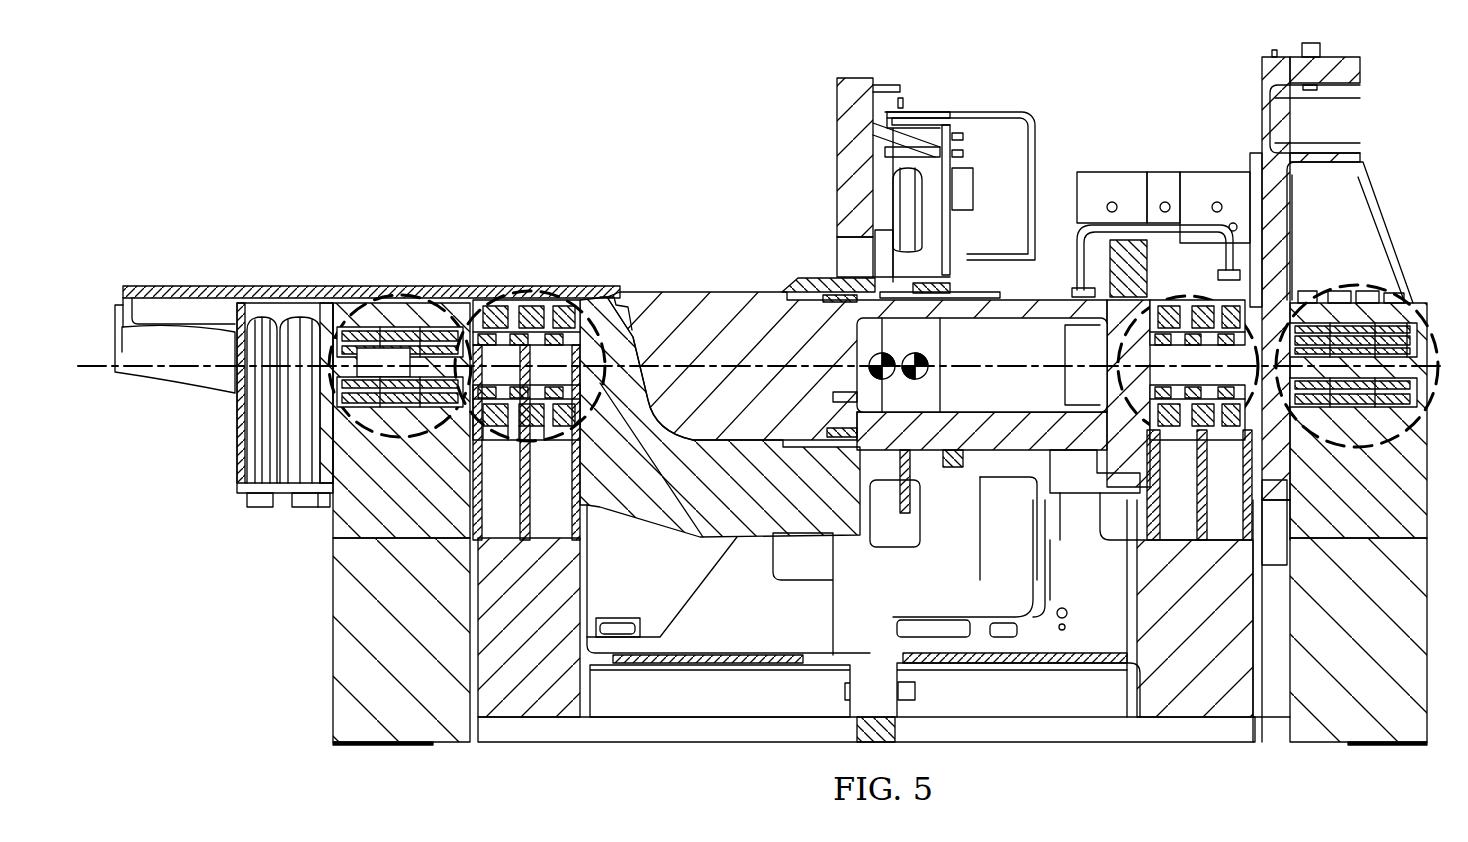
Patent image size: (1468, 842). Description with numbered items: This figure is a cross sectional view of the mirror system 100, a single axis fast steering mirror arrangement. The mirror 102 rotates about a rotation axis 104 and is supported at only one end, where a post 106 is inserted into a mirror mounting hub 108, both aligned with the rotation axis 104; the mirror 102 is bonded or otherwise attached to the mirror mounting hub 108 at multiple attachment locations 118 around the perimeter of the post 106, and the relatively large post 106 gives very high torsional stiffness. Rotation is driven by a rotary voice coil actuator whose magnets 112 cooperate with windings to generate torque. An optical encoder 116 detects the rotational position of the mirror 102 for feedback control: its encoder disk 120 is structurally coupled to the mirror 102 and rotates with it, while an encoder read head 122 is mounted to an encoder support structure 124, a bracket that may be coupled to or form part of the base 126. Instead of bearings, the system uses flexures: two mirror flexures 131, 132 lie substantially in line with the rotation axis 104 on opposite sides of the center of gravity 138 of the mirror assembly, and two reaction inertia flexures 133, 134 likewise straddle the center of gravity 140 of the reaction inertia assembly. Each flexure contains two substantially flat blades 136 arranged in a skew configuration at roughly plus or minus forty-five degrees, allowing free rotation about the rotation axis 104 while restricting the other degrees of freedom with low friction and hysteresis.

The mirror system 100 is at (576, 102).
The mirror 102 is at (300, 286).
The rotation axis 104 is at (178, 372).
The post 106 is at (702, 292).
The mirror mounting hub 108 is at (790, 282).
The magnets 112 is at (1112, 190).
The optical encoder 116 is at (960, 112).
The attachment locations 118 is at (838, 295).
The encoder disk 120 is at (930, 193).
The encoder read head 122 is at (900, 535).
The encoder support structure 124 is at (858, 78).
The base 126 is at (545, 718).
The mirror flexure 131 is at (521, 473).
The mirror flexure 132 is at (927, 365).
The reaction inertia flexure 133 is at (405, 293).
The reaction inertia flexure 134 is at (1345, 290).
The blades 136 is at (520, 306).
The center of gravity of the mirror assembly 138 is at (869, 360).
The center of gravity of the reaction inertia assembly 140 is at (925, 372).